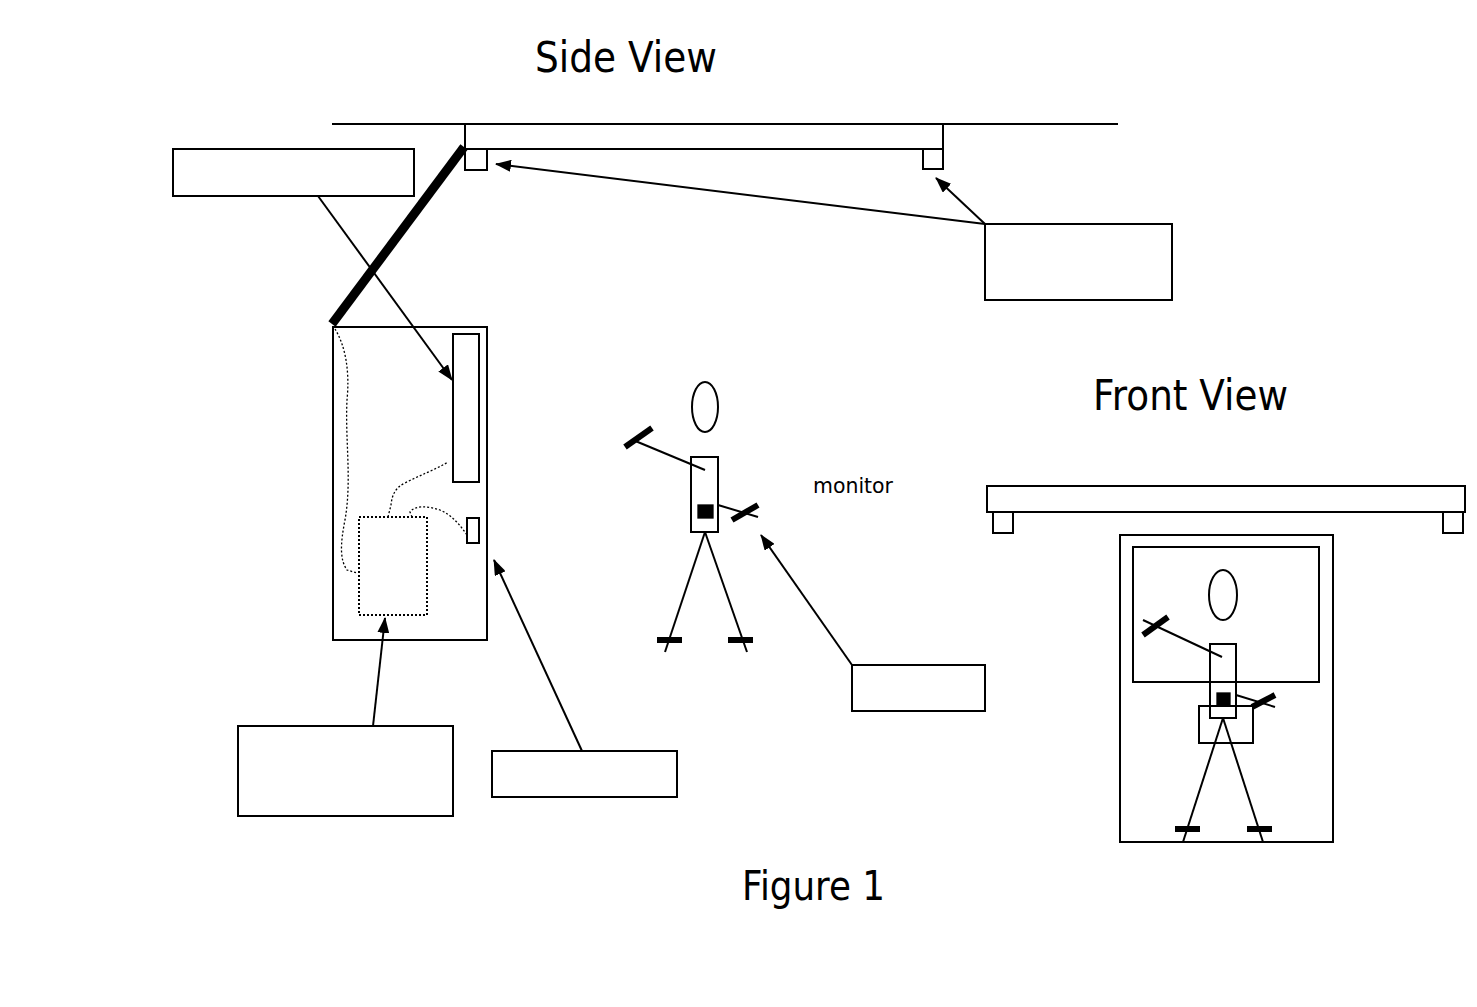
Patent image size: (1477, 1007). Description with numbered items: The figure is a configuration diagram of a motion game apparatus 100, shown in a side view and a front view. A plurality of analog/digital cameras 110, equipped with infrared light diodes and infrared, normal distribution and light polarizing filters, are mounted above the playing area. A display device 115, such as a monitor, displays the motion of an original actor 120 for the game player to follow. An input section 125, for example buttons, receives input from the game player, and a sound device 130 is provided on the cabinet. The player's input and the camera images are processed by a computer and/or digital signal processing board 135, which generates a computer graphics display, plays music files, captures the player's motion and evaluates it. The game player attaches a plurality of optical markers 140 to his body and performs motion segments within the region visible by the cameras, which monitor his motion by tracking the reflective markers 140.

The motion game apparatus 100 is at (1072, 106).
The analog/digital cameras 110 is at (1102, 224).
The display device 115 is at (200, 149).
The original actor 120 is at (1272, 828).
The input section 125 is at (590, 797).
The sound device 130 is at (479, 525).
The computer and/or digital signal processing board 135 is at (377, 816).
The optical markers 140 is at (897, 711).